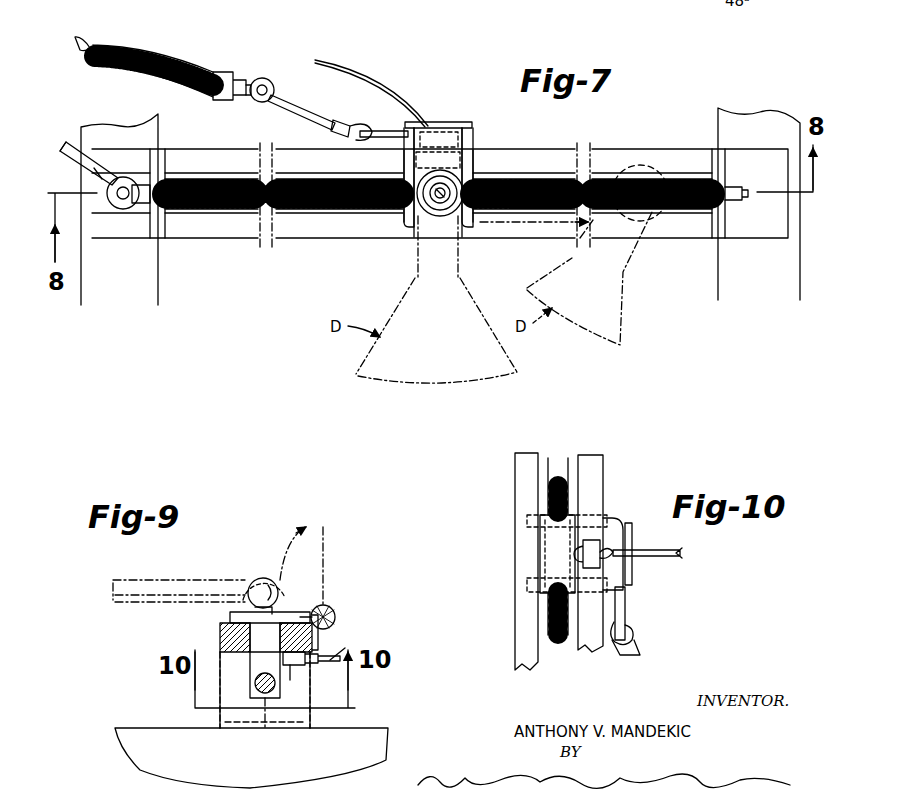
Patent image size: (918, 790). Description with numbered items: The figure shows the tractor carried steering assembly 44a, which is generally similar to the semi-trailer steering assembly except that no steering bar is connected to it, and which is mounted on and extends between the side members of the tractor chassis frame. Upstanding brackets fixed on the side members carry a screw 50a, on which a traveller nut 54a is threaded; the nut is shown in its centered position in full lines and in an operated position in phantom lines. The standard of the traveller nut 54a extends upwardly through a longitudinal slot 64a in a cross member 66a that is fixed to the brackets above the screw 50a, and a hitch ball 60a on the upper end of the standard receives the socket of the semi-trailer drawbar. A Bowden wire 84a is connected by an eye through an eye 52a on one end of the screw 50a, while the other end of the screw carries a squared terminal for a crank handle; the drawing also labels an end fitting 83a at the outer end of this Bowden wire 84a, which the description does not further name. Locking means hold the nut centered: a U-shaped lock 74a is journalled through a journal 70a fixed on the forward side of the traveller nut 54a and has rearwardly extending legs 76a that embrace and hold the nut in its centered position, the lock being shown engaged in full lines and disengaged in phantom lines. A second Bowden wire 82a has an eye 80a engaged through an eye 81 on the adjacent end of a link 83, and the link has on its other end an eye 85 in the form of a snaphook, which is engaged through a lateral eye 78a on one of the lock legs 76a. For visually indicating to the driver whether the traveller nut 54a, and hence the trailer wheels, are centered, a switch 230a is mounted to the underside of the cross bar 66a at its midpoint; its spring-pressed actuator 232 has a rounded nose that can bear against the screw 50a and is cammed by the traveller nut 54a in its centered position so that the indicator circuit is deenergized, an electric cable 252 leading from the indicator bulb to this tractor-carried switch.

In FIG. 7, the tractor carried steering assembly 44a is at (463, 70).
In FIG. 7, the screw 50a is at (562, 182).
In FIG. 9, the screw 50a is at (265, 700).
In FIG. 7, the eye 52a is at (130, 208).
In FIG. 9, the traveller nut 54a is at (282, 690).
In FIG. 10, the traveller nut 54a is at (538, 548).
In FIG. 7, the hitch ball 60a is at (445, 210).
In FIG. 9, the hitch ball 60a is at (270, 578).
In FIG. 7, the longitudinal slot 64a is at (294, 174).
In FIG. 9, the longitudinal slot 64a is at (224, 650).
In FIG. 10, the longitudinal slot 64a is at (575, 475).
In FIG. 7, the cross member 66a is at (660, 153).
In FIG. 9, the cross member 66a is at (226, 630).
In FIG. 10, the cross member 66a is at (525, 471).
In FIG. 7, the journal 70a is at (450, 132).
In FIG. 9, the journal 70a is at (336, 618).
In FIG. 7, the U-shaped lock 74a is at (482, 138).
In FIG. 9, the U-shaped lock 74a is at (330, 578).
In FIG. 10, the U-shaped lock 74a is at (615, 516).
In FIG. 7, the legs 76a is at (403, 160).
In FIG. 7, the lateral eye 78a is at (390, 130).
In FIG. 10, the lateral eye 78a is at (626, 606).
In FIG. 7, the eye 80a is at (255, 78).
In FIG. 7, the eye 81 is at (276, 86).
In FIG. 7, the Bowden wire 82a is at (167, 70).
In FIG. 7, the link 83 is at (335, 122).
In FIG. 10, the link 83 is at (642, 647).
In FIG. 7, the end fitting 83a is at (68, 146).
In FIG. 7, the Bowden wire 84a is at (80, 165).
In FIG. 7, the eye 85 is at (366, 126).
In FIG. 10, the eye 85 is at (634, 627).
In FIG. 9, the switch 230a is at (295, 670).
In FIG. 10, the switch 230a is at (627, 560).
In FIG. 10, the spring-pressed actuators 232 is at (578, 555).
In FIG. 7, the electric cable 252 is at (356, 62).
In FIG. 9, the electric cable 252 is at (362, 644).
In FIG. 10, the electric cable 252 is at (647, 553).